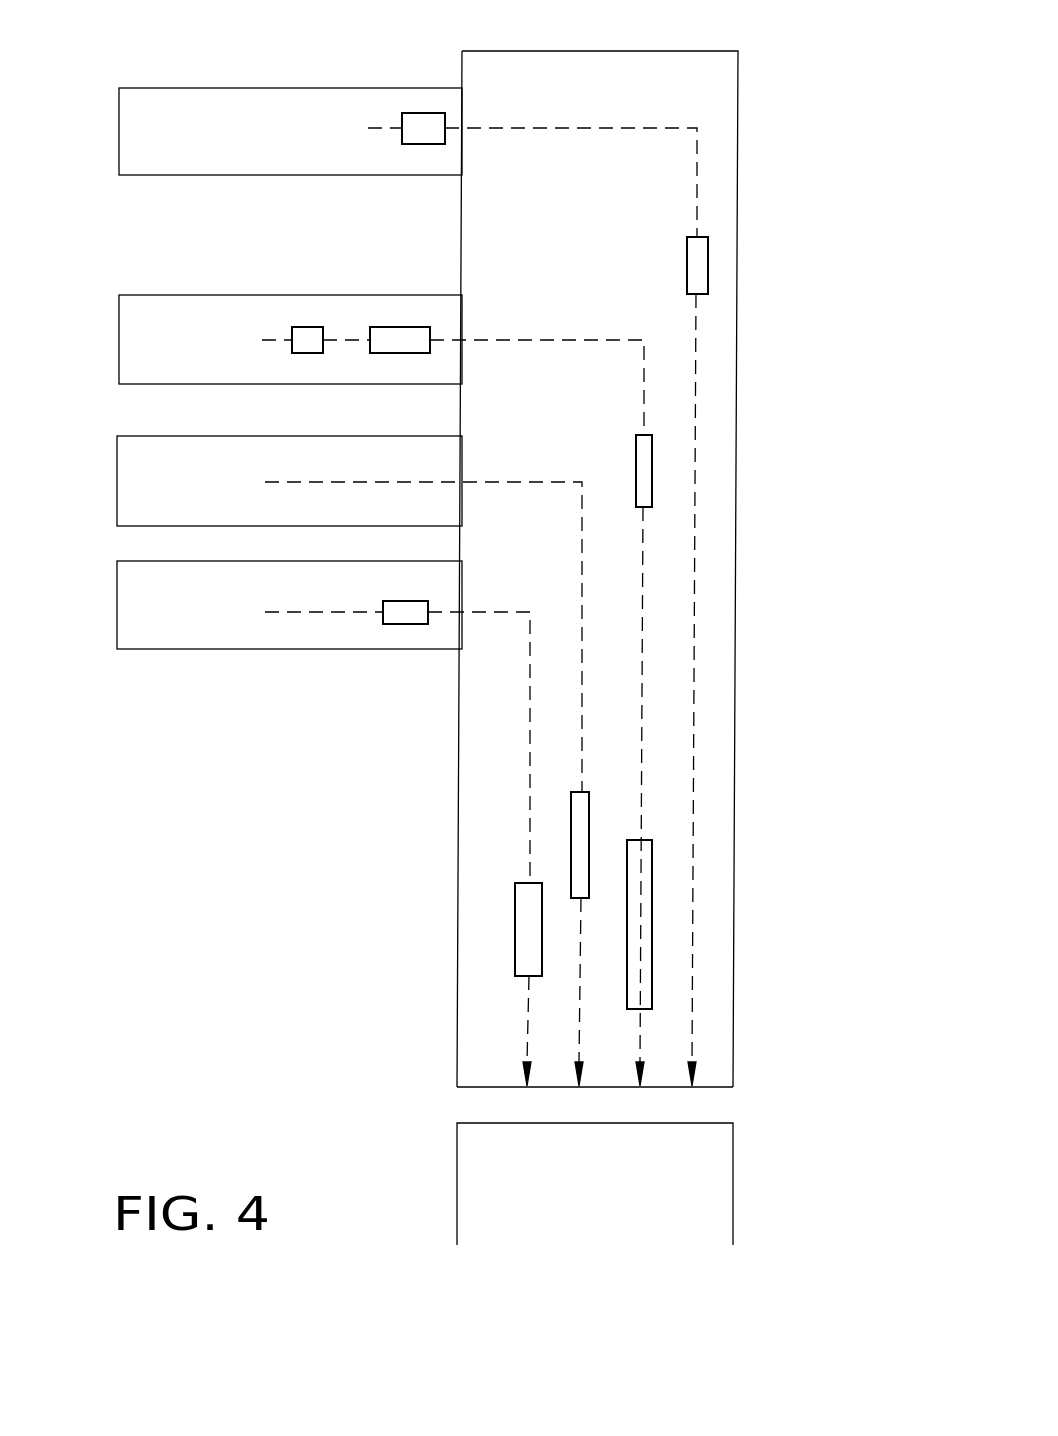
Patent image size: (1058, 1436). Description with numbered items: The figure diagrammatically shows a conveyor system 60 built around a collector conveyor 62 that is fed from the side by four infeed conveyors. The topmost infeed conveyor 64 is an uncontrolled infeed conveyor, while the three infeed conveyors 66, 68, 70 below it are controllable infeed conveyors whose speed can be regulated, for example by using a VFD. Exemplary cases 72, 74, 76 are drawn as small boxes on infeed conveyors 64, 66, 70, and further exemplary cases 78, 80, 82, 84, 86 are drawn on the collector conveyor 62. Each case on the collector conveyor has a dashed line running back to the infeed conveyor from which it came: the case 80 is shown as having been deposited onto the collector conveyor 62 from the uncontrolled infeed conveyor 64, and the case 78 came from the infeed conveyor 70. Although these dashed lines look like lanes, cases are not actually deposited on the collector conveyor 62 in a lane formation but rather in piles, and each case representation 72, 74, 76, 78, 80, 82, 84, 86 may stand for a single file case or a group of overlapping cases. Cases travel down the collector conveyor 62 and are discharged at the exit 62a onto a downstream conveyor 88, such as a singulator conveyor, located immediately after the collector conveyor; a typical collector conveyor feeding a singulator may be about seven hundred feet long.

The conveyor system 60 is at (747, 77).
The collector conveyor 62 is at (738, 175).
The exit 62a is at (677, 1088).
The infeed conveyor 64 is at (119, 130).
The infeed conveyor 66 is at (119, 335).
The infeed conveyor 68 is at (117, 480).
The infeed conveyor 70 is at (117, 605).
The case 72 is at (423, 113).
The case 74 is at (400, 327).
The case 76 is at (408, 625).
The case 78 is at (515, 932).
The case 80 is at (708, 263).
The case 82 is at (652, 470).
The case 84 is at (590, 815).
The case 86 is at (652, 922).
The conveyor 88 is at (512, 1165).